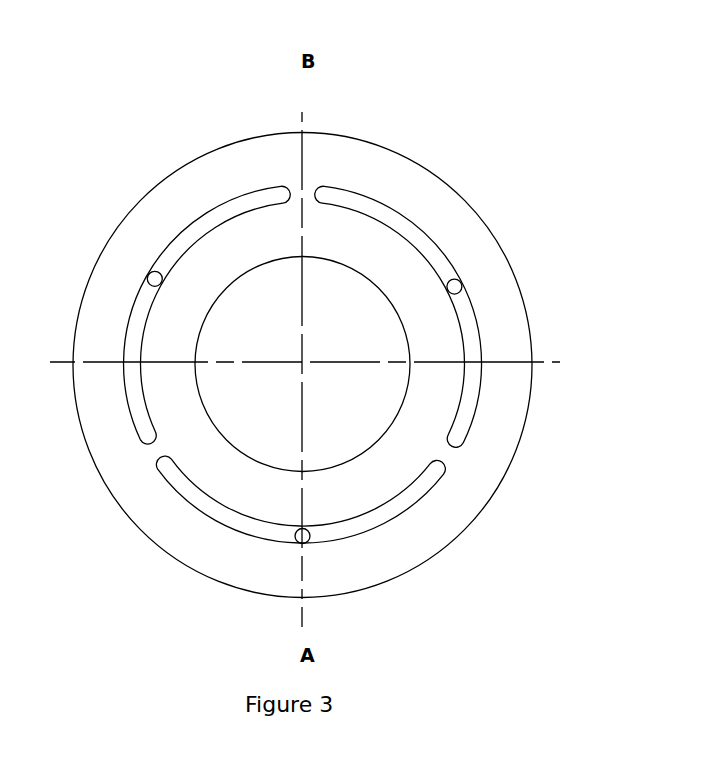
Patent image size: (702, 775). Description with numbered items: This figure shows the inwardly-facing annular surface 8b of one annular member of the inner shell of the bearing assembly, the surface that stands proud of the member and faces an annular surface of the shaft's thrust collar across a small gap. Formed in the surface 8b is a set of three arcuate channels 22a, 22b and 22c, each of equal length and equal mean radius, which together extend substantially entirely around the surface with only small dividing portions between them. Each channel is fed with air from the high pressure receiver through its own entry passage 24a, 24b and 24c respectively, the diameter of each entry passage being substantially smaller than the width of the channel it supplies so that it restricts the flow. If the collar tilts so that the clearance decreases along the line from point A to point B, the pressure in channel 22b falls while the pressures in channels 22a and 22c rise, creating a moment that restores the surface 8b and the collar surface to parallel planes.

The inwardly-facing annular surface 8b is at (370, 170).
The arcuate channel 22a is at (410, 220).
The arcuate channel 22b is at (435, 485).
The arcuate channel 22c is at (222, 205).
The entry passage 24a is at (461, 285).
The entry passage 24b is at (303, 543).
The entry passage 24c is at (148, 276).